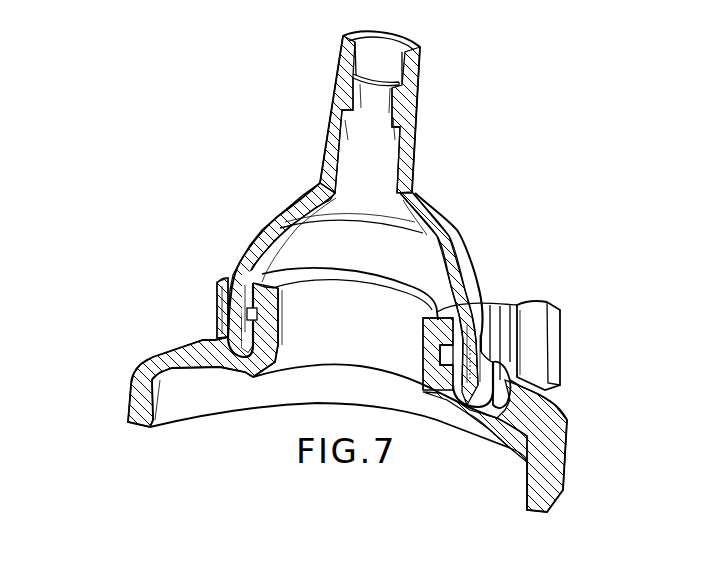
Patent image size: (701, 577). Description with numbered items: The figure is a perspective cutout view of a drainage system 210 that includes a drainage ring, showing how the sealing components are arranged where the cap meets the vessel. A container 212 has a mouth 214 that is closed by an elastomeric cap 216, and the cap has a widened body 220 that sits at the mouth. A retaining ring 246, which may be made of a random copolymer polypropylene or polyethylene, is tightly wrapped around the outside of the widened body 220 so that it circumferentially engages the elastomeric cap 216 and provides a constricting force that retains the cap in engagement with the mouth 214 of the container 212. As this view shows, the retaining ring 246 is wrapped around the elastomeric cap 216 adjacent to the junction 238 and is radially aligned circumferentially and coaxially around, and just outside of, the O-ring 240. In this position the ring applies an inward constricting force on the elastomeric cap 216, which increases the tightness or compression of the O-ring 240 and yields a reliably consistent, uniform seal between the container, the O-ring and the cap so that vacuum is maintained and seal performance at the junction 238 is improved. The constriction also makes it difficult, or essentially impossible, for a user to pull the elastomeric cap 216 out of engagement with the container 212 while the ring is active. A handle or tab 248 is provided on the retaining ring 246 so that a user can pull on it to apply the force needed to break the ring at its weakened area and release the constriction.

The dispensing closure assembly 210 is at (205, 130).
The container 212 is at (140, 408).
The mouth 214 is at (297, 337).
The elastomeric cap 216 is at (460, 241).
The widened body 220 is at (273, 212).
The junction 238 is at (507, 273).
The O-ring 240 is at (447, 348).
The retaining ring 246 is at (223, 281).
The tab 248 is at (552, 303).